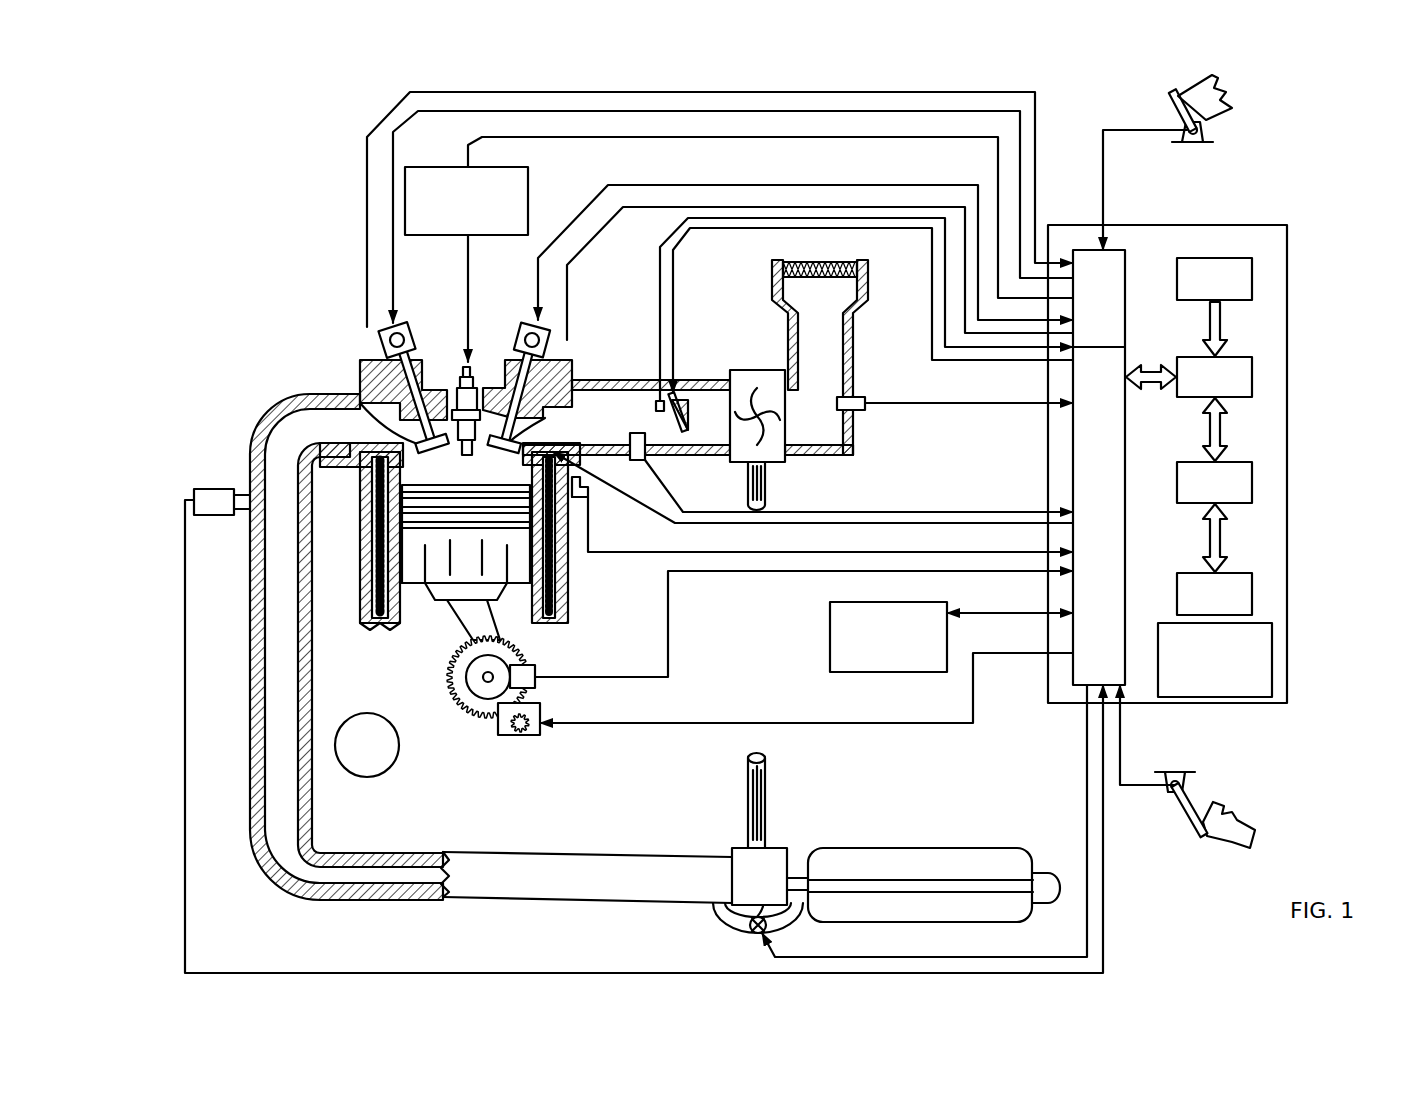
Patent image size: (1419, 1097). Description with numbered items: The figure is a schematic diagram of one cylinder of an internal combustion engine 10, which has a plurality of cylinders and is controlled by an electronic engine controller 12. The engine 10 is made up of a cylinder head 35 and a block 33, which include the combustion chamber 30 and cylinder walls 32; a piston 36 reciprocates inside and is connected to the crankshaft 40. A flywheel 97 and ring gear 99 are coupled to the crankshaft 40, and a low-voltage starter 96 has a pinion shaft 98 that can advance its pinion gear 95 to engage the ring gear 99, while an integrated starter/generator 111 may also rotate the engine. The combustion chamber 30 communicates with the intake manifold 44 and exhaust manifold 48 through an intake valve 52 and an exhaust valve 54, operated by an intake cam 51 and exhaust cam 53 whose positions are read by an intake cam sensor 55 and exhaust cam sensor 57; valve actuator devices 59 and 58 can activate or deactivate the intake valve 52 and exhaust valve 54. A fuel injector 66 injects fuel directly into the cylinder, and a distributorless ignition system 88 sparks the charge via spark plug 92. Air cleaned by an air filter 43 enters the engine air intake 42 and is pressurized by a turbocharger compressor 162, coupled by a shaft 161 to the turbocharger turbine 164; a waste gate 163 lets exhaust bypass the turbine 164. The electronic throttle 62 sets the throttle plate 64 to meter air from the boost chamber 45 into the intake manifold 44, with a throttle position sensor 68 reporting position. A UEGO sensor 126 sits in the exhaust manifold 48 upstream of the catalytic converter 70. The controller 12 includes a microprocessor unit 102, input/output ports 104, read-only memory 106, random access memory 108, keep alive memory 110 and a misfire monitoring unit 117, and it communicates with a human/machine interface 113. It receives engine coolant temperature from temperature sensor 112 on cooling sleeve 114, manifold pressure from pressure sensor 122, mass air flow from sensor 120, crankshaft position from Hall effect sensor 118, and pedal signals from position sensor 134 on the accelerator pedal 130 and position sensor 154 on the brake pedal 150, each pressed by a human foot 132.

The internal combustion engine 10 is at (292, 318).
The electronic engine controller 12 is at (1287, 225).
The combustion chamber 30 is at (390, 560).
The cylinder walls 32 is at (407, 613).
The block 33 is at (358, 505).
The cylinder head 35 is at (355, 366).
The piston 36 is at (447, 577).
The crankshaft 40 is at (480, 706).
The engine air intake 42 is at (752, 278).
The air filter 43 is at (838, 278).
The intake manifold 44 is at (602, 434).
The boost chamber 45 is at (730, 380).
The exhaust manifold 48 is at (342, 438).
The intake cam 51 is at (525, 322).
The intake valve 52 is at (512, 430).
The exhaust cam 53 is at (400, 322).
The exhaust valve 54 is at (372, 408).
The intake cam sensor 55 is at (550, 355).
The exhaust cam sensor 57 is at (383, 347).
The valve actuator device 58 is at (412, 347).
The valve actuator device 59 is at (525, 347).
The electronic throttle 62 is at (686, 408).
The throttle plate 64 is at (686, 428).
The fuel injector 66 is at (578, 488).
The throttle position sensor 68 is at (657, 400).
The catalytic converter 70 is at (850, 847).
The distributorless ignition system 88 is at (418, 167).
The spark plug 92 is at (471, 367).
The pinion gear 95 is at (528, 738).
The starter 96 is at (533, 737).
The flywheel 97 is at (462, 673).
The pinion shaft 98 is at (520, 740).
The ring gear 99 is at (482, 718).
The microprocessor unit 102 is at (1252, 380).
The input/output ports 104 is at (1133, 255).
The read-only memory 106 is at (1252, 278).
The random access memory 108 is at (1252, 485).
The keep alive memory 110 is at (1252, 598).
The integrated starter/generator 111 is at (367, 745).
The temperature sensor 112 is at (822, 514).
The human/machine interface 113 is at (951, 637).
The cooling sleeve 114 is at (553, 573).
The misfire monitoring unit 117 is at (1215, 660).
The Hall effect sensor 118 is at (536, 664).
The mass air flow sensor 120 is at (862, 400).
The pressure sensor 122 is at (642, 460).
The Universal Exhaust Gas Oxygen sensor 126 is at (194, 492).
The accelerator pedal 130 is at (1172, 102).
The human foot 132 is at (1223, 92).
The position sensor 134 is at (1217, 131).
The brake pedal 150 is at (1202, 840).
The position sensor 154 is at (1170, 787).
The shaft 161 is at (748, 495).
The turbocharger compressor 162 is at (770, 455).
The waste gate 163 is at (753, 935).
The turbocharger turbine 164 is at (740, 848).